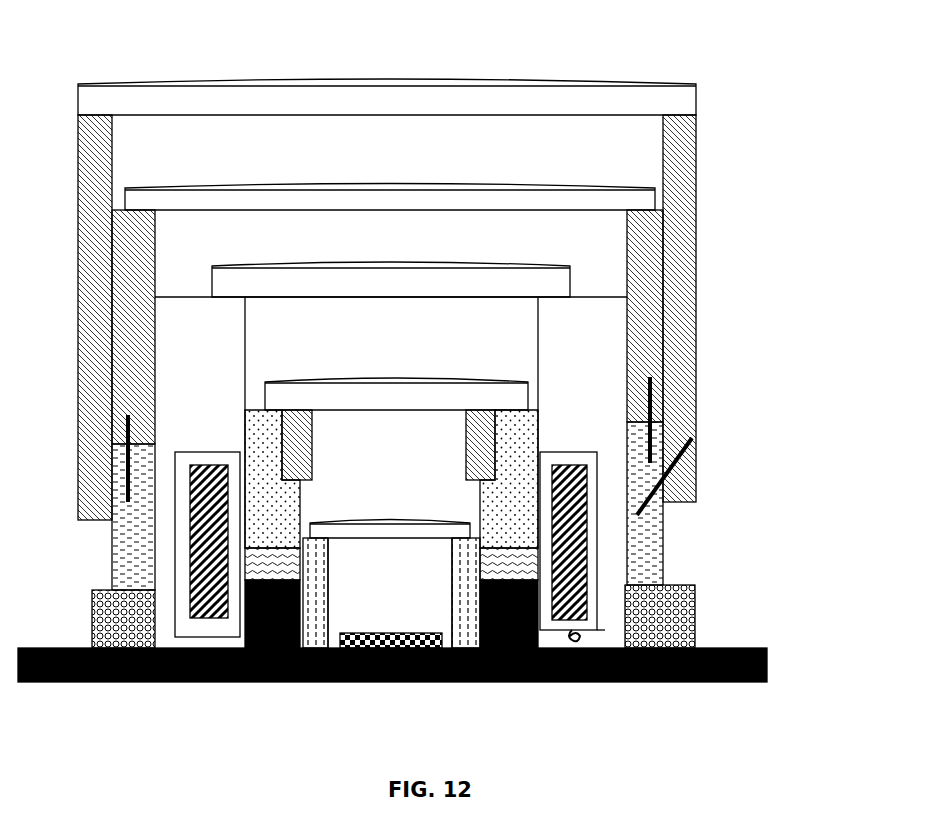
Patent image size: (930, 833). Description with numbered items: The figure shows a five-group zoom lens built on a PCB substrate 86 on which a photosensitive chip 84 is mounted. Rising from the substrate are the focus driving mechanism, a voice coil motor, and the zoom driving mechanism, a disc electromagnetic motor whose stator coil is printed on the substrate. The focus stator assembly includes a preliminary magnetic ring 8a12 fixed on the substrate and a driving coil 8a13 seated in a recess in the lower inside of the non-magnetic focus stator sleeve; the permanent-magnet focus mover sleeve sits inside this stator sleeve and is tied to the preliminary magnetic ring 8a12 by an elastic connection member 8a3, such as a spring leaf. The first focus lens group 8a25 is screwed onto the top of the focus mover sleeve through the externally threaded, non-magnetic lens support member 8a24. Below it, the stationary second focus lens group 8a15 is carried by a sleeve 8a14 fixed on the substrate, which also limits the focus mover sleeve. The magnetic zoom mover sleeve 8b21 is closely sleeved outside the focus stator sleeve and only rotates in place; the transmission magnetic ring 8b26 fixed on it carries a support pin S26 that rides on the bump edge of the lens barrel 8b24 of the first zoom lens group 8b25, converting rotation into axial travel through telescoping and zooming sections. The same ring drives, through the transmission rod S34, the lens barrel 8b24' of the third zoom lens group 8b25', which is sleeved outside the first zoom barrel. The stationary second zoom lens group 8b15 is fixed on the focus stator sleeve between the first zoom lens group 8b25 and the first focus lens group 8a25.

The third zoom lens group 8b25' is at (387, 61).
The first zoom lens group 8b25 is at (390, 108).
The first focus lens group 8a25 is at (425, 397).
The second focus lens group 8a15 is at (433, 533).
The second zoom lens group 8b15 is at (527, 277).
The lens barrel of the third zoom lens group 8b24' is at (441, 317).
The lens barrel of the first zoom lens group 8b24 is at (458, 327).
The lens support member 8a24 is at (477, 443).
The support pin S26 is at (655, 402).
The transmission rod S34 is at (672, 472).
The transmission magnetic ring 8b26 is at (805, 537).
The PCB substrate 86 is at (27, 660).
The zoom mover sleeve 8b21 is at (107, 645).
The driving coil 8a13 is at (208, 602).
The preliminary magnetic ring 8a12 is at (274, 627).
The photosensitive chip 84 is at (378, 642).
The sleeve 8a14 is at (463, 645).
The elastic connection member 8a3 is at (510, 583).